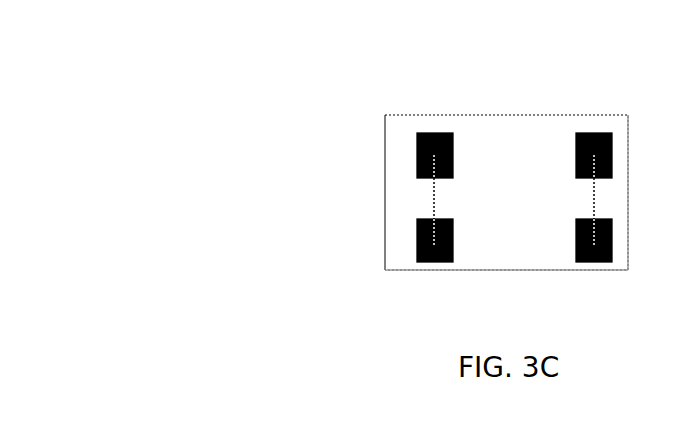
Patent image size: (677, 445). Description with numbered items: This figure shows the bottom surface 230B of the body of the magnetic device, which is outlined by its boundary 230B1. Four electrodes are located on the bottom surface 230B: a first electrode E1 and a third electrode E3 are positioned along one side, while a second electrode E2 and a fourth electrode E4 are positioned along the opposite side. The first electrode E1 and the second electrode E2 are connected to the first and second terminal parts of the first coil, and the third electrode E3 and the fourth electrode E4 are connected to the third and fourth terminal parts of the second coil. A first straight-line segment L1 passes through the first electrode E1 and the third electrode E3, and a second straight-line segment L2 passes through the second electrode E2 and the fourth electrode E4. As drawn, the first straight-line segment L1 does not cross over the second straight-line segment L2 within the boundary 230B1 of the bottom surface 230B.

The bottom surface 230B is at (485, 150).
The boundary 230B1 is at (384, 213).
The first electrode E1 is at (415, 132).
The second electrode E2 is at (614, 131).
The third electrode E3 is at (413, 266).
The fourth electrode E4 is at (617, 266).
The first straight-line segment L1 is at (449, 200).
The second straight-line segment L2 is at (578, 200).